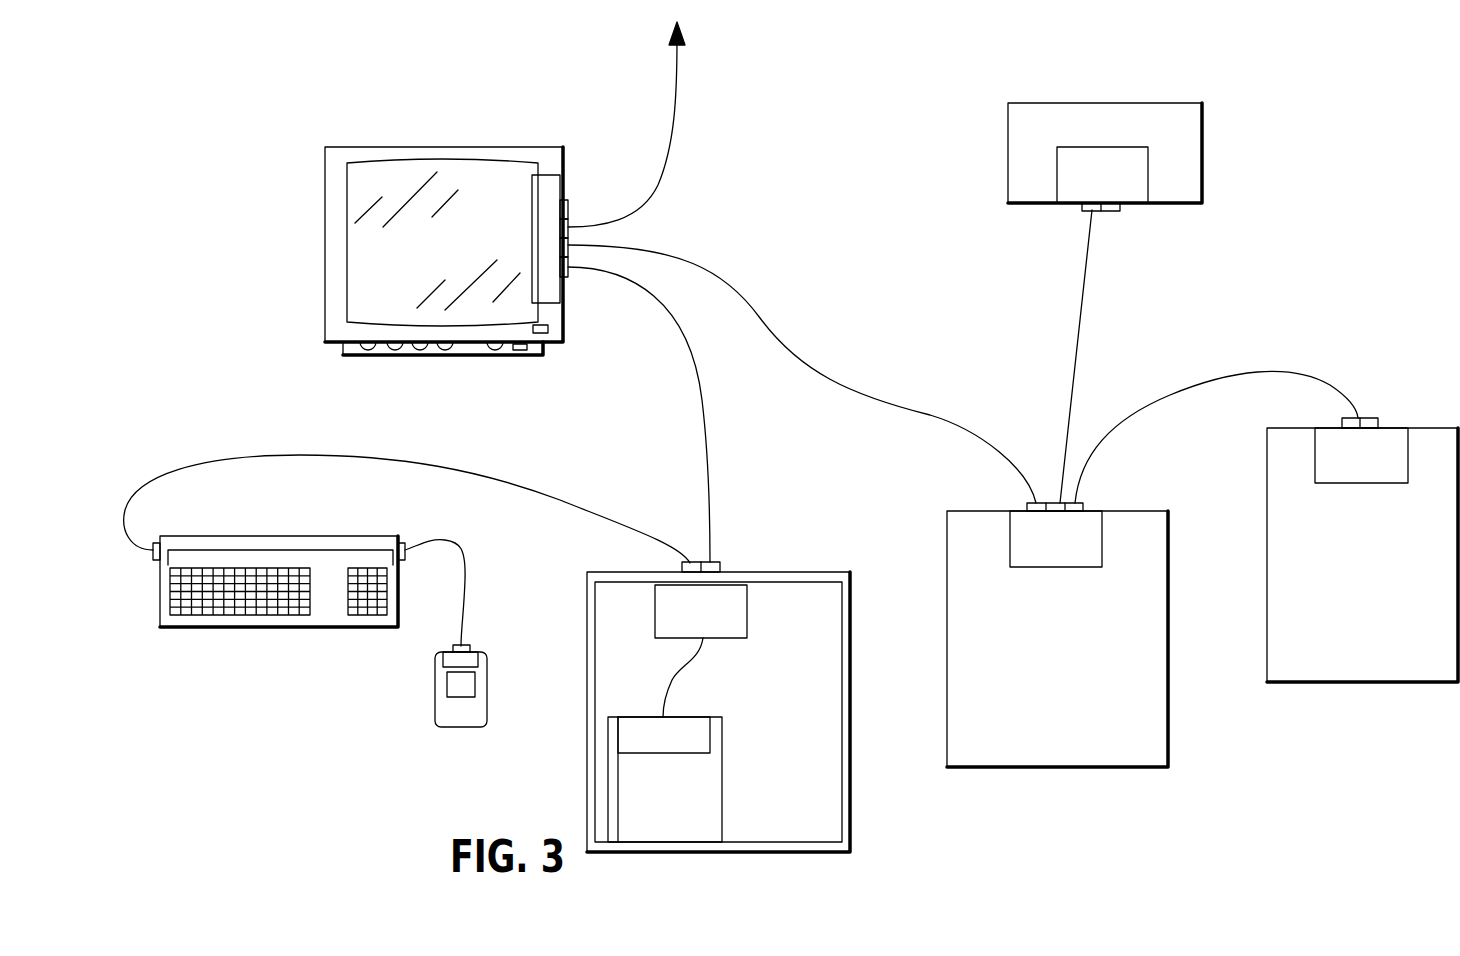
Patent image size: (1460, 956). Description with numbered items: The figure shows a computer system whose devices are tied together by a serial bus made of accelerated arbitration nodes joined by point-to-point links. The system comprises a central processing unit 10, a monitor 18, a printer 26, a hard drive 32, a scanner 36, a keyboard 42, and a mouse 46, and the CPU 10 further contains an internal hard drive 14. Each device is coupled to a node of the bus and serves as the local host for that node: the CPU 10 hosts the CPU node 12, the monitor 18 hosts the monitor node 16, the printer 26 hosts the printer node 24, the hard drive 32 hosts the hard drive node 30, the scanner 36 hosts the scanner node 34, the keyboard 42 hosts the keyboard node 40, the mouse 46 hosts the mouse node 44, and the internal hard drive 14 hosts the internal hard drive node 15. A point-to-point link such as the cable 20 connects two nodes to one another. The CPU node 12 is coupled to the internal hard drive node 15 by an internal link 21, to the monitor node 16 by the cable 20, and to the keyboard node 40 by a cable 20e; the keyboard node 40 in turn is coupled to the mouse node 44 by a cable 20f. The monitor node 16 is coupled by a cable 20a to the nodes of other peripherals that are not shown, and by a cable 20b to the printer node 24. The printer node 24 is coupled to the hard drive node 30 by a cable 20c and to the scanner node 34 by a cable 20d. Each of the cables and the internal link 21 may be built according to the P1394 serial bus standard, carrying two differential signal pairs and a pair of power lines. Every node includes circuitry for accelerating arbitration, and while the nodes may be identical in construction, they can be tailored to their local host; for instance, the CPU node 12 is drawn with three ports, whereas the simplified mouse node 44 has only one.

The central processing unit 10 is at (850, 815).
The CPU node 12 is at (740, 598).
The internal hard drive 14 is at (718, 797).
The internal hard drive node 15 is at (710, 728).
The monitor node 16 is at (555, 180).
The monitor 18 is at (325, 220).
The cable 20 is at (706, 430).
The cable 20a is at (672, 145).
The cable 20b is at (760, 276).
The cable 20c is at (1078, 307).
The cable 20d is at (1200, 388).
The cable 20e is at (505, 458).
The cable 20f is at (465, 560).
The internal link 21 is at (695, 694).
The printer node 24 is at (1020, 518).
The printer 26 is at (1050, 768).
The hard drive node 30 is at (1130, 198).
The hard drive 32 is at (1136, 103).
The scanner node 34 is at (1326, 437).
The scanner 36 is at (1355, 683).
The keyboard node 40 is at (248, 507).
The keyboard 42 is at (190, 628).
The mouse node 44 is at (470, 658).
The mouse 46 is at (477, 715).